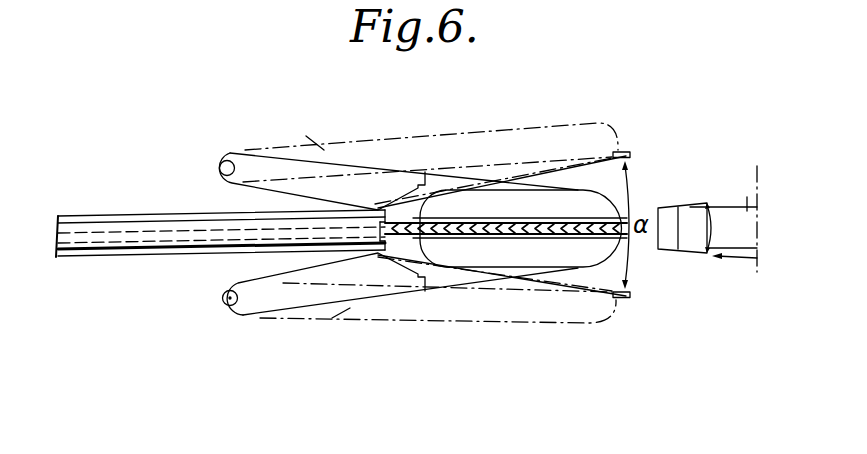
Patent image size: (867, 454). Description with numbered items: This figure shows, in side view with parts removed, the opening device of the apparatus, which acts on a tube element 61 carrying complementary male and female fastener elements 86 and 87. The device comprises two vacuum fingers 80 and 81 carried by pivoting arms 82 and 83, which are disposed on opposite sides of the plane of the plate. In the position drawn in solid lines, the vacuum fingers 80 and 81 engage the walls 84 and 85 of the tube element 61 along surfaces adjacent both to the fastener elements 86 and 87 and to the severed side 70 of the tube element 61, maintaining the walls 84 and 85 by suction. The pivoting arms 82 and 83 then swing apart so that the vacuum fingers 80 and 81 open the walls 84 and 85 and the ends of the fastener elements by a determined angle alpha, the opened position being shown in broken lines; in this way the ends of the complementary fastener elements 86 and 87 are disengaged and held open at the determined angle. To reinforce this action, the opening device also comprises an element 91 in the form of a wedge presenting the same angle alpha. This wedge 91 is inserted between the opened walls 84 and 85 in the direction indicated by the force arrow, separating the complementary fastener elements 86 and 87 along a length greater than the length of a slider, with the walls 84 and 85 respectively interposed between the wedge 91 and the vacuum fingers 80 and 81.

The tube element 61 is at (166, 206).
The severed side 70 is at (660, 238).
The vacuum finger 80 is at (589, 204).
The vacuum finger 81 is at (589, 250).
The pivoting arm 82 is at (310, 168).
The pivoting arm 83 is at (320, 296).
The wall of the tube element 84 is at (505, 238).
The wall of the tube element 85 is at (513, 223).
The complementary fastener element 86 is at (108, 250).
The complementary fastener element 87 is at (102, 223).
The wedge 91 is at (746, 205).